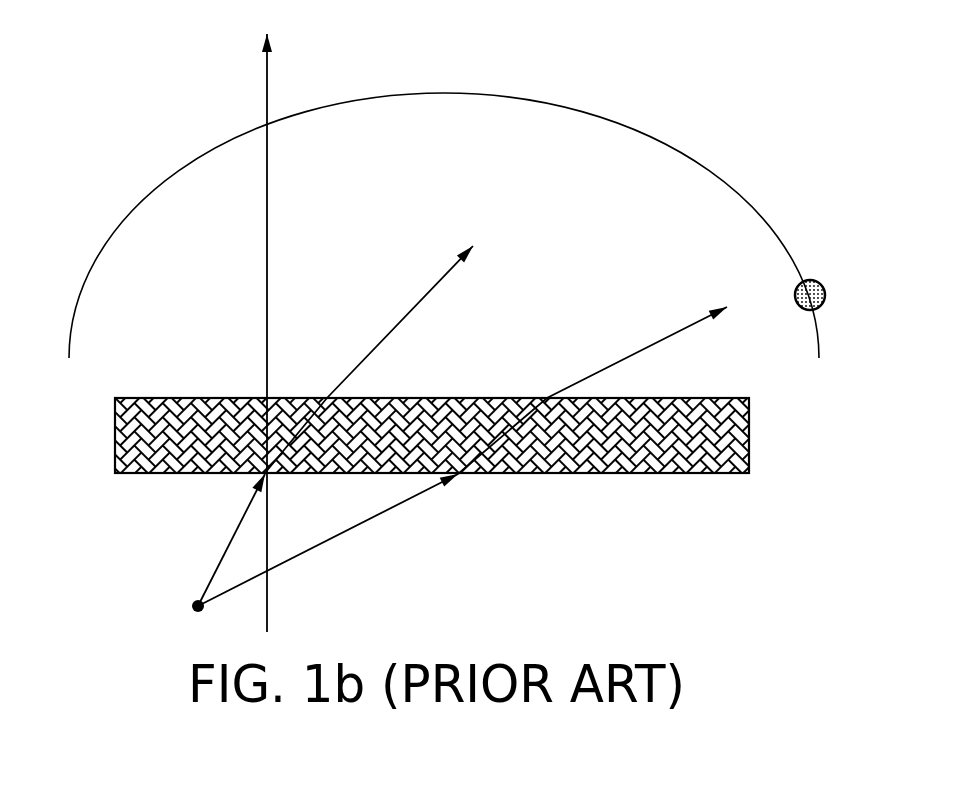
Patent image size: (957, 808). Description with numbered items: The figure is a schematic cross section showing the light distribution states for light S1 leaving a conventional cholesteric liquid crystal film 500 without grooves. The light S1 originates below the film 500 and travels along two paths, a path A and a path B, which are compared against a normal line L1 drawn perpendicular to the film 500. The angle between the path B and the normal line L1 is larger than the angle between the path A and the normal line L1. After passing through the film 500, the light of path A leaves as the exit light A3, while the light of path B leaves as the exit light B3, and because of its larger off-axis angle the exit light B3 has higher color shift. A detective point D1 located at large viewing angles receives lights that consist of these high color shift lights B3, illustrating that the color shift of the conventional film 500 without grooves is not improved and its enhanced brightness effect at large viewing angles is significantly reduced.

The conventional cholesteric liquid crystal film without grooves 500 is at (115, 435).
The normal line L1 is at (268, 316).
The light S1 is at (195, 603).
The path A of the light A is at (242, 521).
The exit light A3 is at (387, 346).
The path B of the light B is at (372, 519).
The exit light B3 is at (610, 378).
The detective point D1 is at (827, 284).